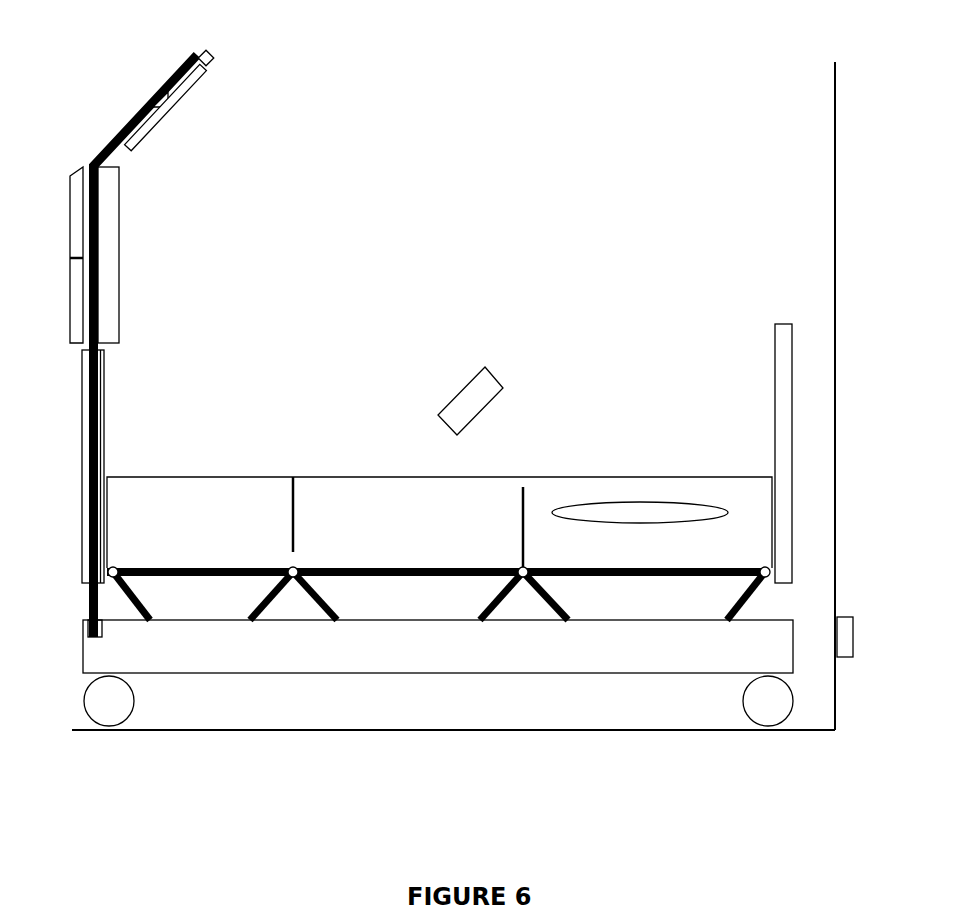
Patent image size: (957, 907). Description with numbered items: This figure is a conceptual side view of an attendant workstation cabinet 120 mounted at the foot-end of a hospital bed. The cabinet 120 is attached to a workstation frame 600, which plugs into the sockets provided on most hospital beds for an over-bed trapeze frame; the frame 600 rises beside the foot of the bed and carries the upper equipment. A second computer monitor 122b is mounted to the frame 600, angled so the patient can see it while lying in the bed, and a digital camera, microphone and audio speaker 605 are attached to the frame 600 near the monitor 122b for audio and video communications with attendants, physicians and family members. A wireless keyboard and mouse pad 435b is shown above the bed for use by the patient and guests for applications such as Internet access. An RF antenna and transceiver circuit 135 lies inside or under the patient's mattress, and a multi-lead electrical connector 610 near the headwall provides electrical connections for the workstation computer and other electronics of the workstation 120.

The workstation frame 600 is at (107, 148).
The camera, microphone and speaker 605 is at (214, 53).
The second computer monitor 122b is at (182, 90).
The attendant workstation cabinet 120 is at (108, 255).
The wireless keyboard and mouse pad 435b is at (493, 377).
The RF antenna and transceiver circuit 135 is at (623, 502).
The multi-lead electrical connector 610 is at (853, 640).